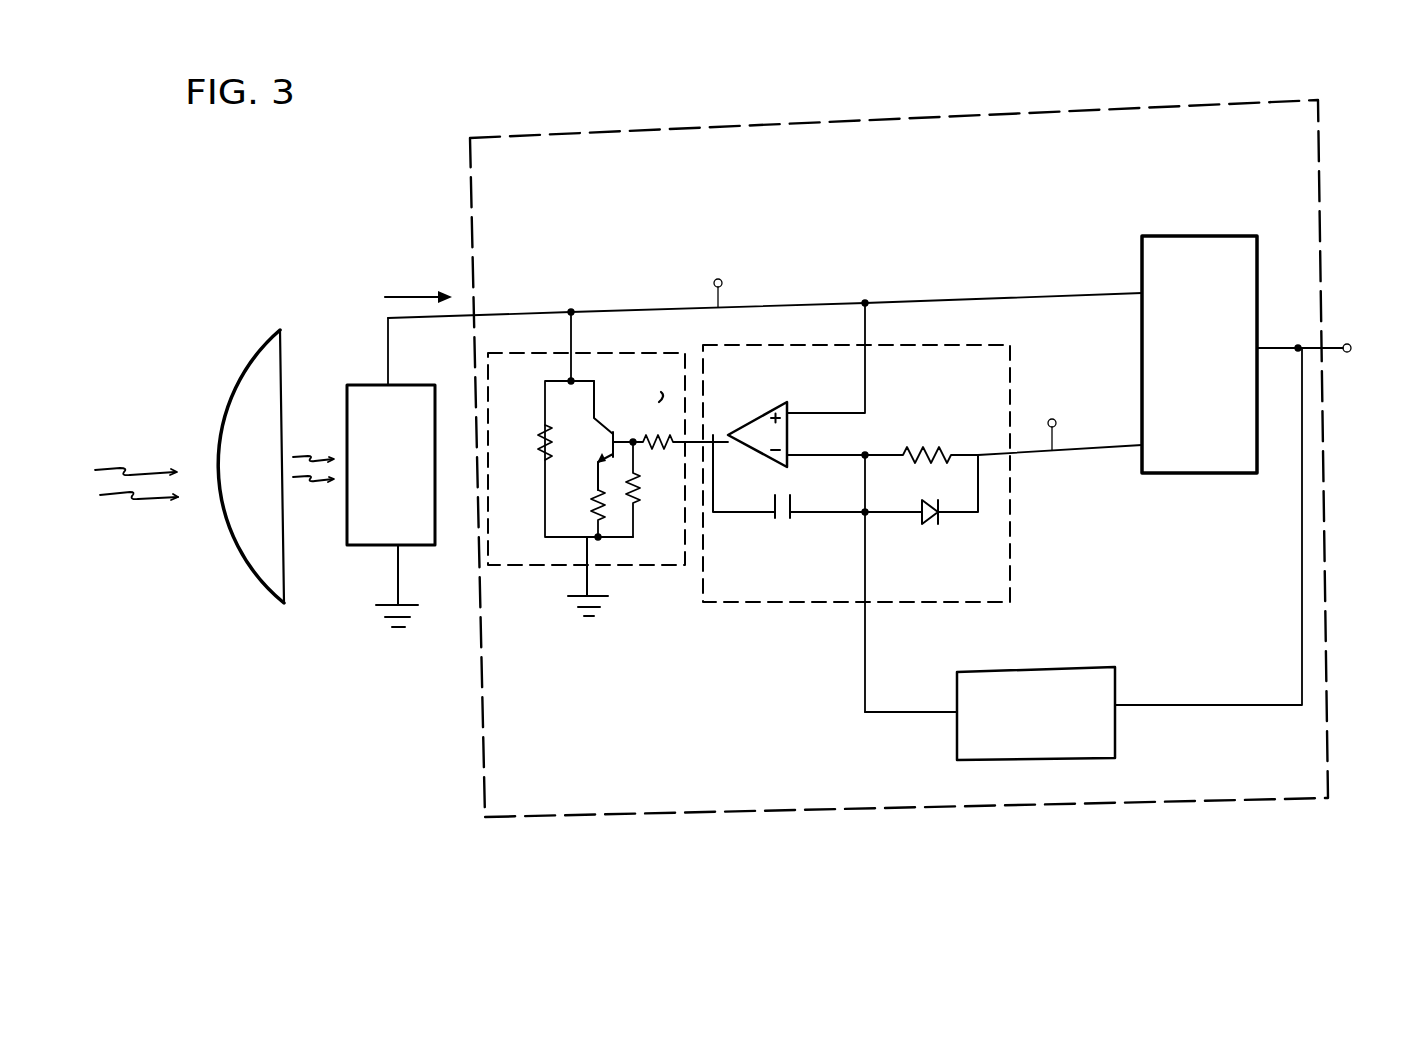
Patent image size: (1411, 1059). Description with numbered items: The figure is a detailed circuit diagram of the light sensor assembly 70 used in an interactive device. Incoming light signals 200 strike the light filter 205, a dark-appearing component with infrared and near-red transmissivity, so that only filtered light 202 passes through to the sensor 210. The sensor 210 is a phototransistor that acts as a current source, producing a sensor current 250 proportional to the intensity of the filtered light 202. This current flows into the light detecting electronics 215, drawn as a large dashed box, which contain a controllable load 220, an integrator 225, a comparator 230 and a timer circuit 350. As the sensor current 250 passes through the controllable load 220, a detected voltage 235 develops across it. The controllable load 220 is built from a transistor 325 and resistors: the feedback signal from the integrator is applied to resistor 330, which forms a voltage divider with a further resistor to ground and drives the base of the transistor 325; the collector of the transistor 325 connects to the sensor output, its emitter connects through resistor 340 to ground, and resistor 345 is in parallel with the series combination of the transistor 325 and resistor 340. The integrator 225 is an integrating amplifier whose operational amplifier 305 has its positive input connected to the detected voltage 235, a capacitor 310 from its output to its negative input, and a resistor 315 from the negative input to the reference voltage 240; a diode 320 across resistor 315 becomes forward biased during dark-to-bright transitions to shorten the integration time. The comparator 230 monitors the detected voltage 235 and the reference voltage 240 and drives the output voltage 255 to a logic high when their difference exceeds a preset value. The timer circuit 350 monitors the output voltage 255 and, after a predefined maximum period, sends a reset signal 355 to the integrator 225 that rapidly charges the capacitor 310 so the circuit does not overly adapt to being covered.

The light sensor assembly 70 is at (530, 44).
The light signals 200 is at (151, 450).
The filtered light 202 is at (331, 443).
The light filter 205 is at (291, 334).
The sensor 210 is at (435, 376).
The light detecting electronics 215 is at (979, 100).
The controllable load 220 is at (676, 345).
The integrator 225 is at (1004, 333).
The comparator 230 is at (1211, 228).
The detected voltage (VSENSE) 235 is at (831, 294).
The reference voltage (VREF) 240 is at (1066, 455).
The sensor current (ISENSOR) 250 is at (441, 254).
The output voltage (VOUT) 255 is at (1350, 360).
The operational amplifier (U1) 305 is at (788, 408).
The capacitor (C1) 310 is at (777, 556).
The resistor (R1) 315 is at (965, 408).
The diode (D1) 320 is at (930, 556).
The transistor (Q1) 325 is at (596, 435).
The resistor (R2) 330 is at (666, 502).
The resistor (R4) 340 is at (580, 518).
The resistor (R5) 345 is at (508, 430).
The timer circuit 350 is at (1059, 673).
The reset signal 355 is at (885, 712).